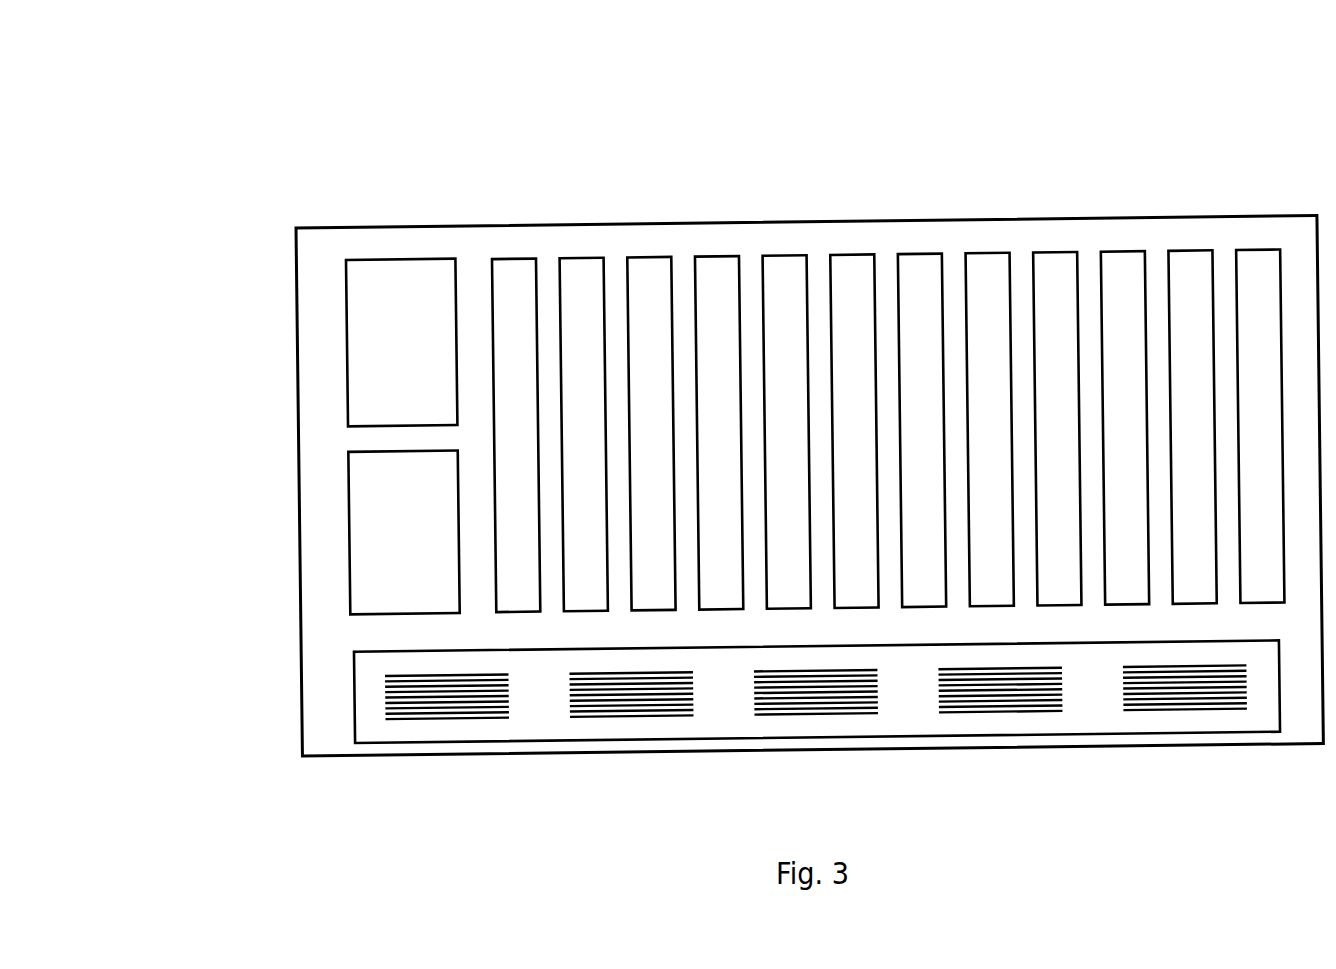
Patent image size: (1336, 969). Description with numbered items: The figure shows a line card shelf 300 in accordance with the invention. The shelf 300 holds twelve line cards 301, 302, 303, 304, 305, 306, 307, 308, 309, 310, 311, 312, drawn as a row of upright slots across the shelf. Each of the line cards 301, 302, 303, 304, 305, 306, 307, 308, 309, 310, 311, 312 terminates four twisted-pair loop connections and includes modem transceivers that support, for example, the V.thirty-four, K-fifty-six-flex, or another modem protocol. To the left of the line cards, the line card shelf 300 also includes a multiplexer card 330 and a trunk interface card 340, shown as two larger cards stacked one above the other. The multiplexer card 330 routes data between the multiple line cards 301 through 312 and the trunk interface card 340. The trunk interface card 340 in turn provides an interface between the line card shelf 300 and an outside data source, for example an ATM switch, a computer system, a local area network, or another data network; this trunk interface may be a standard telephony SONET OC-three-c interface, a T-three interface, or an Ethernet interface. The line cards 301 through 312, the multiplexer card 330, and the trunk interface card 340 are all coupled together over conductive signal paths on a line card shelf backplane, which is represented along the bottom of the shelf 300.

The line card shelf 300 is at (196, 87).
The line card 301 is at (525, 262).
The line card 302 is at (581, 262).
The line card 303 is at (660, 262).
The line card 304 is at (717, 262).
The line card 305 is at (795, 262).
The line card 306 is at (852, 262).
The line card 307 is at (930, 262).
The line card 308 is at (987, 262).
The line card 309 is at (1066, 262).
The line card 310 is at (1122, 262).
The line card 311 is at (1201, 262).
The line card 312 is at (1258, 262).
The multiplexer card 330 is at (342, 361).
The trunk interface card 340 is at (341, 547).